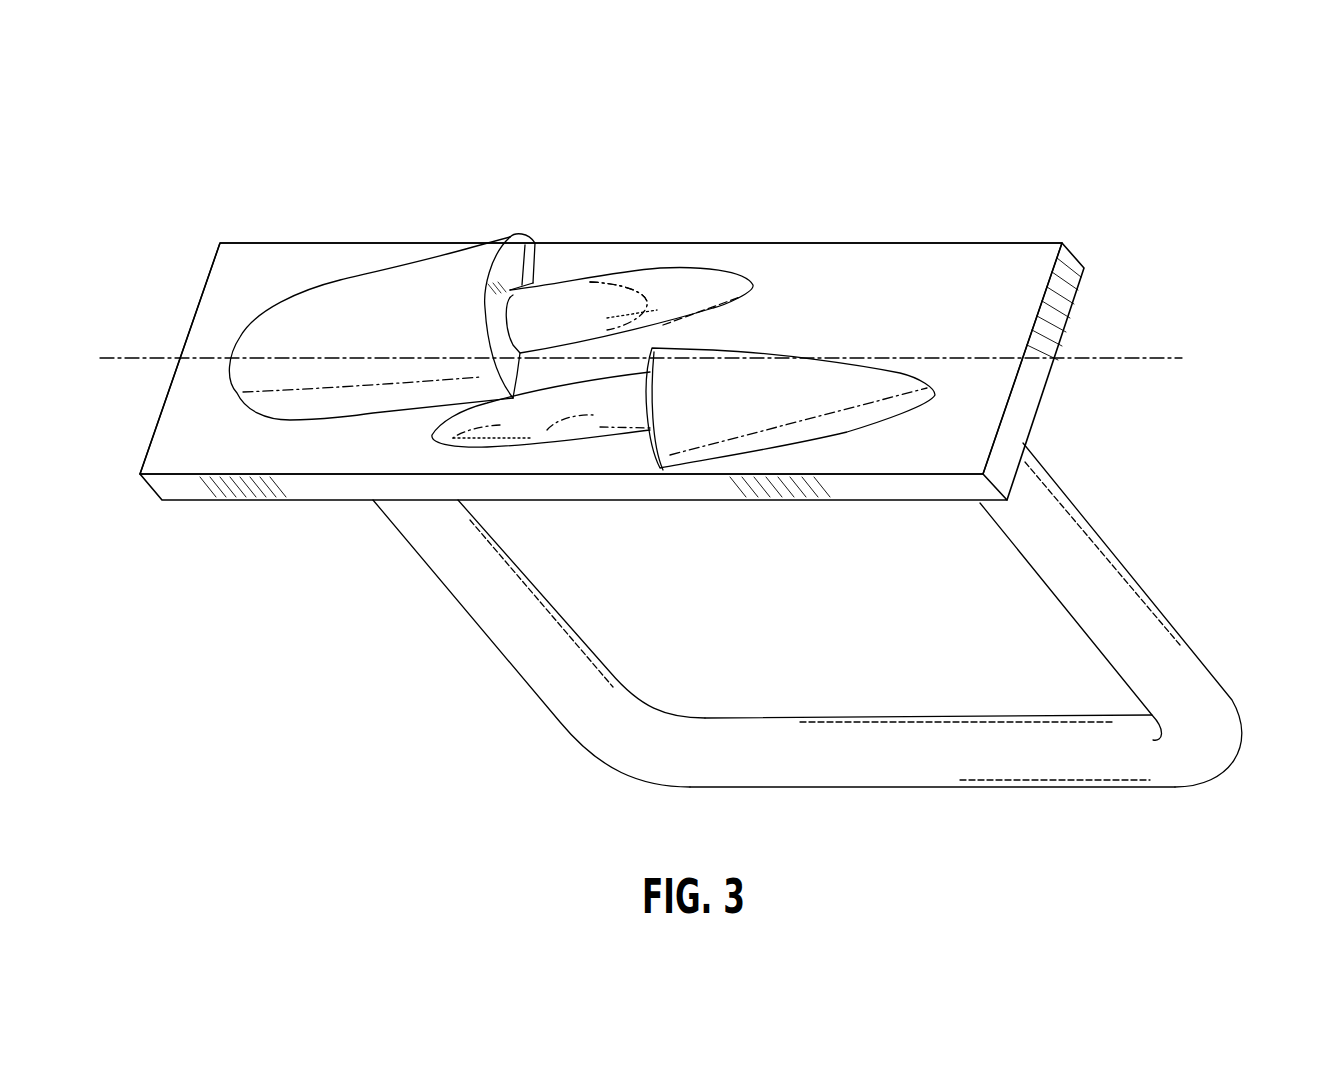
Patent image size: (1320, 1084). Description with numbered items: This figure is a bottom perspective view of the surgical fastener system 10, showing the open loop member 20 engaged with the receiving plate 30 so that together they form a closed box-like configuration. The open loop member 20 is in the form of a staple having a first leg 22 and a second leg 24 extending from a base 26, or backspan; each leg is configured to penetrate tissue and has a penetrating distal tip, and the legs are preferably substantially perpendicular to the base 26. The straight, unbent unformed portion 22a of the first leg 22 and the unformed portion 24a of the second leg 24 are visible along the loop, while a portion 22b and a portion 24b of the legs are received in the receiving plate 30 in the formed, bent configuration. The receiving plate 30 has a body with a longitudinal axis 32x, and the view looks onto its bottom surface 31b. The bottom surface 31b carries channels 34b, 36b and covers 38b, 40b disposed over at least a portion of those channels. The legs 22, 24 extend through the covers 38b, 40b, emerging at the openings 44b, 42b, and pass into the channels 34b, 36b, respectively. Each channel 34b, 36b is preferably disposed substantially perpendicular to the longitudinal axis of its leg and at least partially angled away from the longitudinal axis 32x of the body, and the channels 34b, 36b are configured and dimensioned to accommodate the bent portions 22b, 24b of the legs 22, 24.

The surgical fastener system 10 is at (903, 90).
The open loop member 20 is at (830, 636).
The first leg 22 is at (573, 300).
The unformed portion of first leg 22a is at (533, 695).
The portion of first leg 22b is at (642, 290).
The second leg 24 is at (602, 423).
The unformed portion of second leg 24a is at (1195, 668).
The portion of second leg 24b is at (590, 385).
The base 26 is at (950, 787).
The receiving plate 30 is at (1062, 398).
The bottom surface 31b is at (930, 335).
The longitudinal axis of body 32x is at (1130, 358).
The channel 34b is at (720, 298).
The channel 36b is at (490, 428).
The cover 38b is at (433, 272).
The cover 40b is at (813, 378).
The opening 42b is at (637, 410).
The opening 44b is at (532, 283).